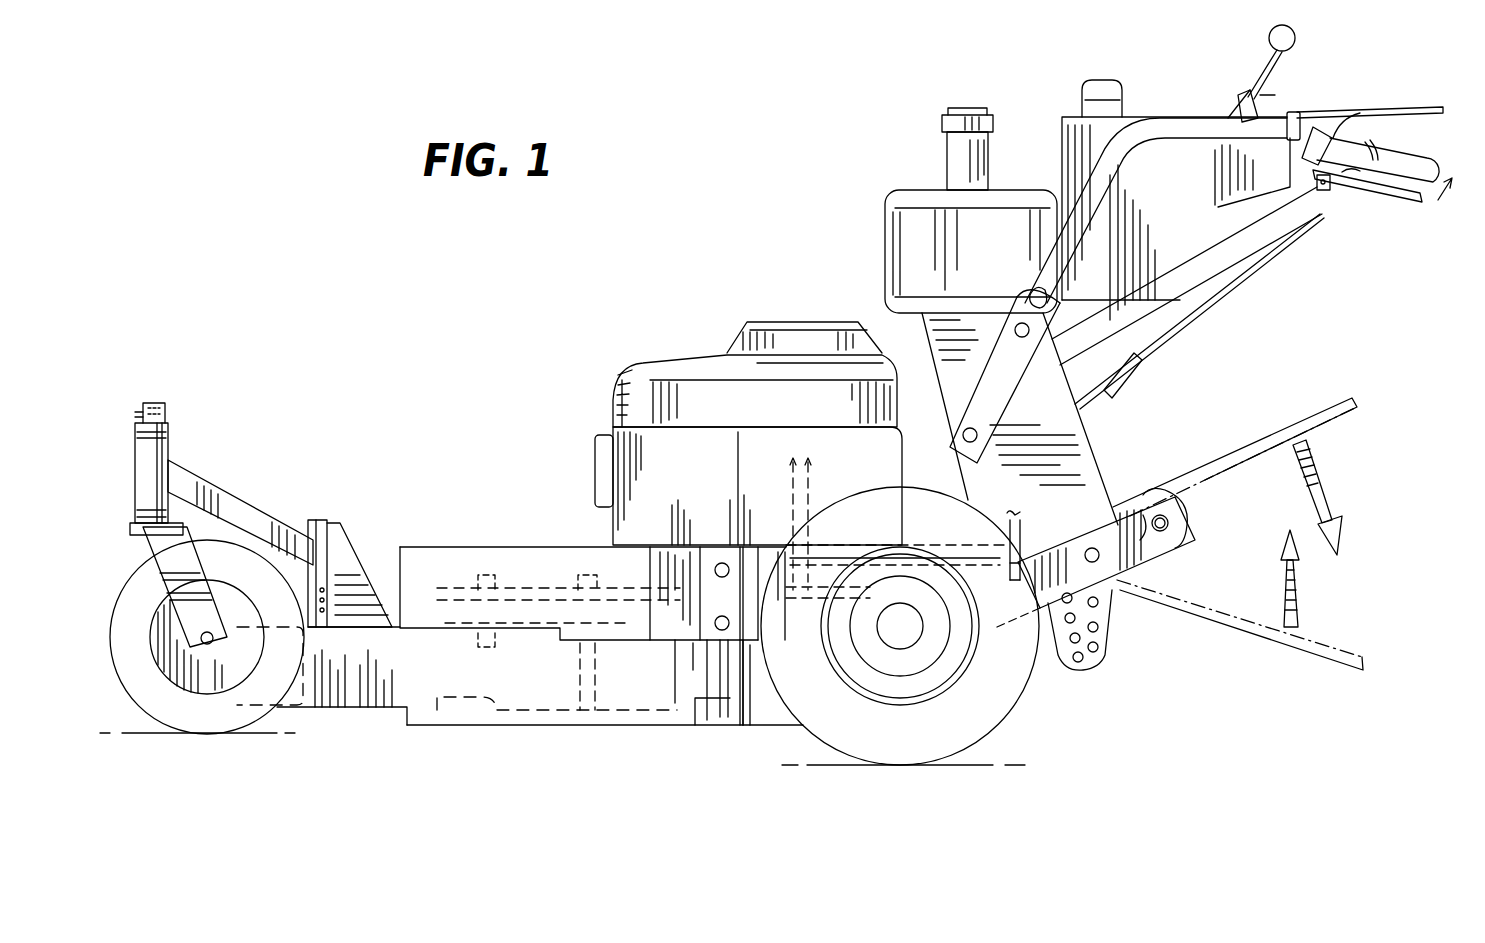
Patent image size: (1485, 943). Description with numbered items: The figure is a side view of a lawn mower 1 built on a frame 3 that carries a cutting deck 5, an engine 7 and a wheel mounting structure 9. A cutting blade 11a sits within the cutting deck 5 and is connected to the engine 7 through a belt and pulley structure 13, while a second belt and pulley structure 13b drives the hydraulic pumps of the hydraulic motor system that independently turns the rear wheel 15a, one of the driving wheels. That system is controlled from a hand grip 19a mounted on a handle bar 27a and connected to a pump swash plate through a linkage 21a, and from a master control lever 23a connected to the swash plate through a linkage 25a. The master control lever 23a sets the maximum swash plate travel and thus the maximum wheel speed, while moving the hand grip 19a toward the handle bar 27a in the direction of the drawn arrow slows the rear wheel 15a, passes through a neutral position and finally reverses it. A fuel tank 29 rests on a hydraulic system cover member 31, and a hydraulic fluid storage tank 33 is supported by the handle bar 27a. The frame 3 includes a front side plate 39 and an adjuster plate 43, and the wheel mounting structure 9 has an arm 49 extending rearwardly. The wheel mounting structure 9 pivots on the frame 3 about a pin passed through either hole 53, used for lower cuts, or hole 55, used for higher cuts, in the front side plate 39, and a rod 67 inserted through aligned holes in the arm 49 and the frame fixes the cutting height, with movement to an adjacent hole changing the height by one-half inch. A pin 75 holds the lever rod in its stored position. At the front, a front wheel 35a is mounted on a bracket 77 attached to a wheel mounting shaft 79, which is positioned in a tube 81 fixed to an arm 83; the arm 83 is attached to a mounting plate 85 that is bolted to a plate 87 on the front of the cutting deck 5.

The lawn mower 1 is at (804, 288).
The frame 3 is at (827, 540).
The cutting deck 5 is at (460, 558).
The engine 7 is at (692, 393).
The wheel mounting structure 9 is at (1017, 613).
The cutting blade 11a is at (482, 720).
The belt and pulley structure 13 is at (543, 573).
The belt and pulley structure 13b is at (867, 587).
The rear wheel 15a is at (900, 652).
The hand grip 19a is at (1390, 187).
The linkage 21a is at (1240, 268).
The master control lever 23a is at (1287, 75).
The linkage 25a is at (1127, 332).
The handle bar 27a is at (1202, 118).
The fuel tank 29 is at (900, 197).
The hydraulic system cover member 31 is at (1060, 420).
The hydraulic fluid storage tank 33 is at (1152, 160).
The front wheel 35a is at (193, 720).
The front side plate 39 is at (753, 710).
The adjuster plate 43 is at (1118, 500).
The arm 49 is at (1173, 547).
The hole 53 is at (775, 630).
The hole 55 is at (793, 690).
The rod 67 is at (1100, 560).
The pin 75 is at (1177, 507).
The bracket 77 is at (170, 555).
The wheel mounting shaft 79 is at (163, 397).
The tube 81 is at (150, 455).
The arm 83 is at (243, 513).
The mounting plate 85 is at (317, 520).
The plate 87 is at (330, 597).